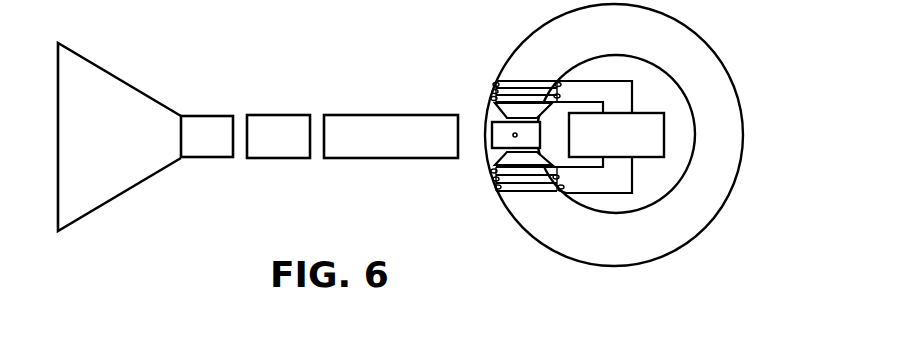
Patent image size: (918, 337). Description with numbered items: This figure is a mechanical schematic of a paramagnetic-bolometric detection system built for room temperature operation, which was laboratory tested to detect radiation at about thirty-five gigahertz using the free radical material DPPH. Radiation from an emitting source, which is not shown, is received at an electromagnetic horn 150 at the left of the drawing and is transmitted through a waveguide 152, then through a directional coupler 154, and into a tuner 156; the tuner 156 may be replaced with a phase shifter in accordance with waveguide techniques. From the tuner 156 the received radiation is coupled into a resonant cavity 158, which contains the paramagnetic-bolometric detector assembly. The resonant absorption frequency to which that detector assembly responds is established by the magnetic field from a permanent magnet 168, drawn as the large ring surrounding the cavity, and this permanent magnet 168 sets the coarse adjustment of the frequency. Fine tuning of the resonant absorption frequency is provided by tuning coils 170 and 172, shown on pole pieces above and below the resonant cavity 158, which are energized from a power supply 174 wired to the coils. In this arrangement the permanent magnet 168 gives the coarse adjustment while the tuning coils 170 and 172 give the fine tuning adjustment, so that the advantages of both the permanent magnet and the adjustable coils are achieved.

The electromagnetic horn 150 is at (113, 73).
The waveguide 152 is at (199, 115).
The directional coupler 154 is at (273, 114).
The tuner 156 is at (383, 114).
The resonant cavity 158 is at (490, 131).
The permanent magnet 168 is at (688, 28).
The tuning coil 170 is at (497, 85).
The tuning coil 172 is at (497, 188).
The power supply 174 is at (665, 118).